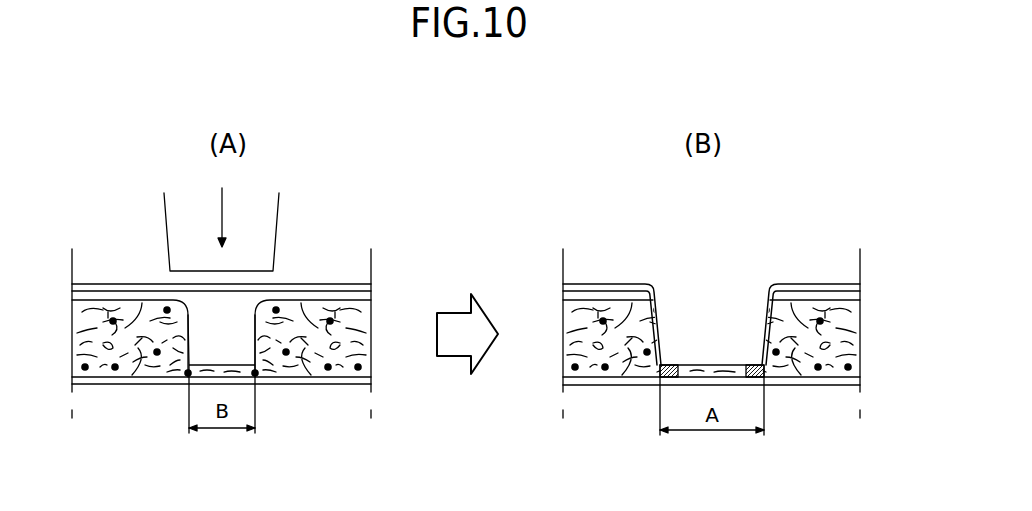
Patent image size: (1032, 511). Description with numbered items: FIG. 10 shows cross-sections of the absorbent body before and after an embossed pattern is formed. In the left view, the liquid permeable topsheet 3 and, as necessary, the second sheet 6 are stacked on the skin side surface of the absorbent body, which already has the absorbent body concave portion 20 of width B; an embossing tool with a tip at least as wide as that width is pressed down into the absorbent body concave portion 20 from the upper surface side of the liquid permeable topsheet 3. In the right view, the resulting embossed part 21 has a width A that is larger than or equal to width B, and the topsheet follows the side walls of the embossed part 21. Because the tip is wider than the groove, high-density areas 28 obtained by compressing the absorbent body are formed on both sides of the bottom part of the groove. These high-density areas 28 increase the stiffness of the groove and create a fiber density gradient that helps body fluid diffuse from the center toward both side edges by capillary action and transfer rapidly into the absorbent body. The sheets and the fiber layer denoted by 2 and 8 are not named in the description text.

The lower sheet 2 is at (323, 385).
The liquid permeable topsheet 3 is at (126, 284).
The second sheet 6 is at (336, 291).
The fiber core layer 8 is at (115, 372).
The absorbent body concave portion 20 is at (189, 319).
The embossed part 21 is at (661, 324).
The high-density area 28 is at (668, 378).